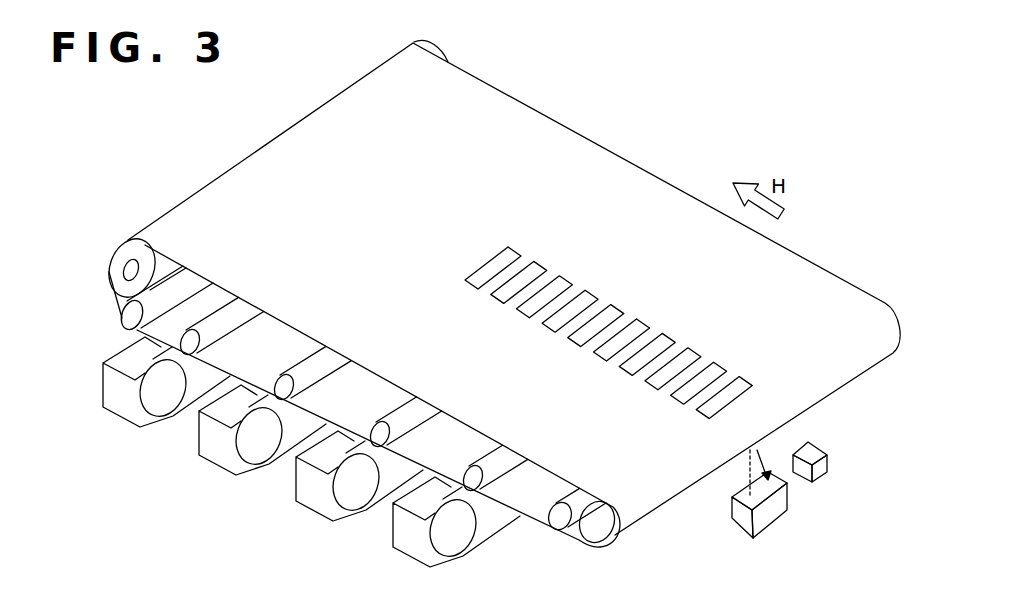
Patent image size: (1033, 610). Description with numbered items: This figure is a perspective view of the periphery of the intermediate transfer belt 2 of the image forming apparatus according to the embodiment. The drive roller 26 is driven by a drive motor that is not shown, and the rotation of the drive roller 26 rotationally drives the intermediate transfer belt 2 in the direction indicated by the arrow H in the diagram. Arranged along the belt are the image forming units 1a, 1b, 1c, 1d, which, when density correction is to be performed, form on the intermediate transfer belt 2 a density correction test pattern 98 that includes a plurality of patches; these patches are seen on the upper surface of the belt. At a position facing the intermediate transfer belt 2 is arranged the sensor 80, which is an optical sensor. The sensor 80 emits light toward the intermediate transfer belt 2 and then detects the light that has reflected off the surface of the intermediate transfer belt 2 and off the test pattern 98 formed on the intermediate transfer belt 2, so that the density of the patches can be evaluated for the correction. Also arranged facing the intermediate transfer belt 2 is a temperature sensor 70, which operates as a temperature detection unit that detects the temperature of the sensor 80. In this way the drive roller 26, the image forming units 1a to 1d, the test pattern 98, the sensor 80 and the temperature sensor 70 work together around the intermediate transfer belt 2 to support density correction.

The intermediate transfer belt 2 is at (513, 108).
The drive roller 26 is at (110, 267).
The density correction test pattern 98 is at (678, 342).
The image forming unit 1a is at (120, 412).
The image forming unit 1b is at (223, 458).
The image forming unit 1c is at (320, 501).
The image forming unit 1d is at (418, 547).
The temperature sensor 70 is at (824, 452).
The sensor 80 is at (742, 523).